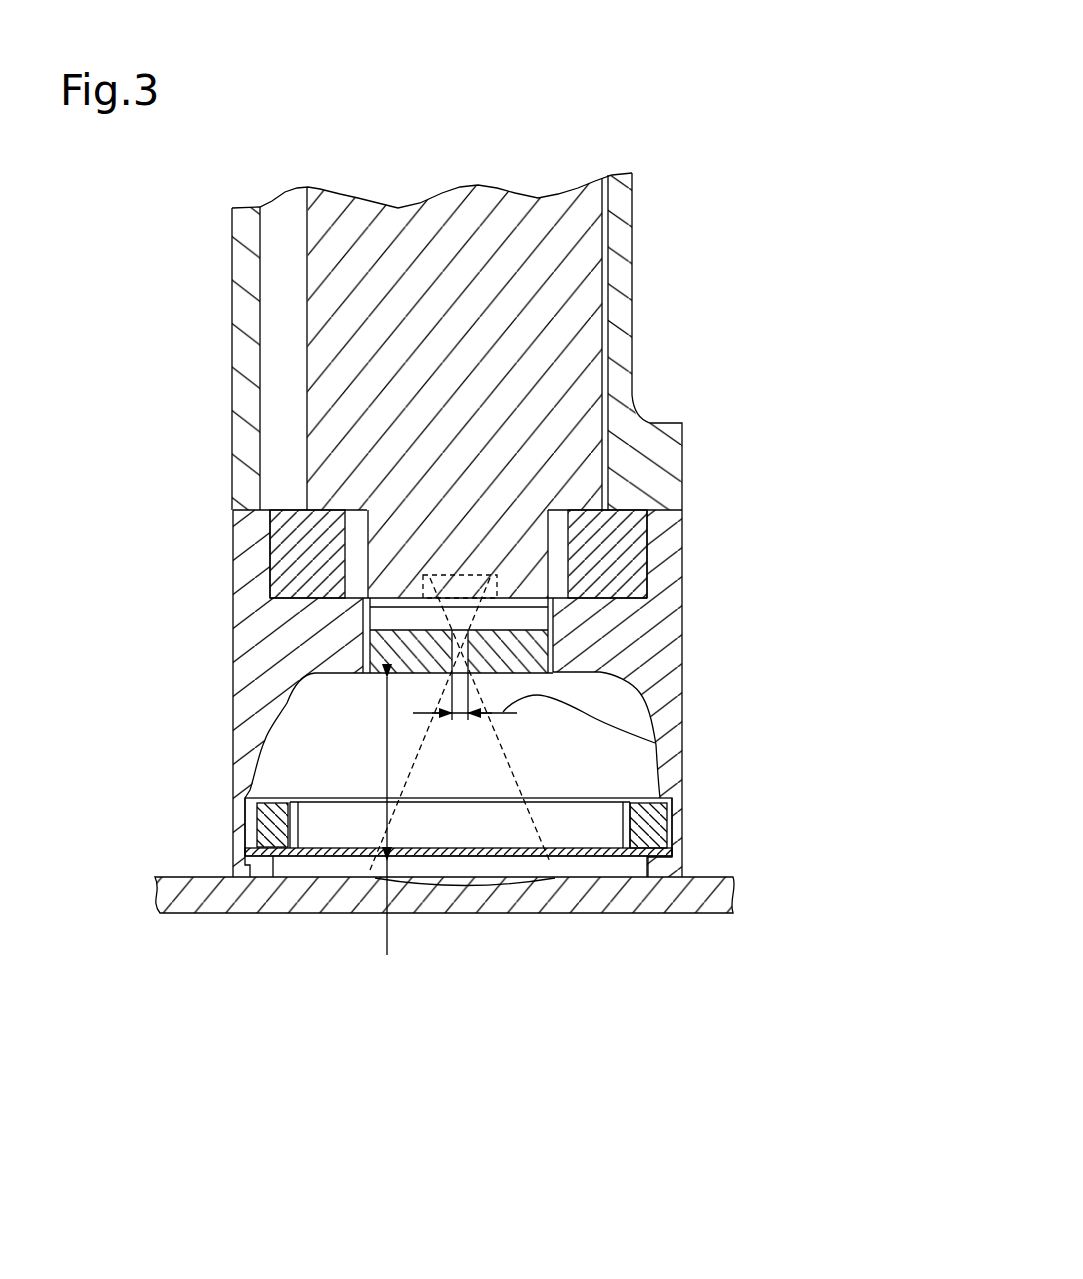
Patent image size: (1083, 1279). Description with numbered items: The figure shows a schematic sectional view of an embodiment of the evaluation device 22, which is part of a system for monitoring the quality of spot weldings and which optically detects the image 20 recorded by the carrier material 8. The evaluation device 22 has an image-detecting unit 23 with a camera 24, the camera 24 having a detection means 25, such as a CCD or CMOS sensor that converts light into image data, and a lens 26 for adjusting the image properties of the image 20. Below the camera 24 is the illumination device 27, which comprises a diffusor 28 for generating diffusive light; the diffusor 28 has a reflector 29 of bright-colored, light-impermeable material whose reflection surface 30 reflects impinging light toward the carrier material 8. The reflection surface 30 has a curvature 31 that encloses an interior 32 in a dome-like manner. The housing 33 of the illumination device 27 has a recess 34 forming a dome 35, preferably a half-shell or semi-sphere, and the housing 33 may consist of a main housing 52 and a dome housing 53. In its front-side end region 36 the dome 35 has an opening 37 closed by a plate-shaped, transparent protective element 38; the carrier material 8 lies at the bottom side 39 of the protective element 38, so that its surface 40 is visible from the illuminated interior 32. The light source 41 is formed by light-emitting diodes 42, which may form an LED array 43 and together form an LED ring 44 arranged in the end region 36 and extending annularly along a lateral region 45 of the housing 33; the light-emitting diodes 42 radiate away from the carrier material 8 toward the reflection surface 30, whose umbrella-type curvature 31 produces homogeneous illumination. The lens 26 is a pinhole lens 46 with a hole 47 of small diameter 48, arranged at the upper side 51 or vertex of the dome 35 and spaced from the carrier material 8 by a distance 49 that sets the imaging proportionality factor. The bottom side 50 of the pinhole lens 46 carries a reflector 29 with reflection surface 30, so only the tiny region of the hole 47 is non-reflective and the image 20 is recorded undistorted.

The carrier material 8 is at (278, 897).
The image 20 is at (464, 883).
The evaluation device 22 is at (742, 146).
The image-detecting unit 23 is at (742, 498).
The camera 24 is at (538, 200).
The detection means 25 is at (497, 576).
The lens 26 is at (468, 654).
The illumination device 27 is at (232, 625).
The diffusor 28 is at (290, 698).
The reflector 29 is at (352, 677).
The reflection surface 30 is at (318, 678).
The curvature 31 is at (282, 688).
The interior 32 is at (658, 777).
The housing 33 is at (670, 618).
The recess 34 is at (507, 798).
The dome 35 is at (268, 675).
The front-side end region 36 is at (215, 846).
The opening 37 is at (623, 875).
The protective element 38 is at (263, 870).
The bottom side 39 is at (517, 858).
The surface 40 is at (712, 873).
The light source 41 is at (245, 810).
The light-emitting diode 42 is at (647, 817).
The LED array 43 is at (240, 857).
The LED ring 44 is at (257, 858).
The lateral region 45 is at (682, 860).
The pinhole lens 46 is at (353, 622).
The hole 47 is at (583, 688).
The diameter 48 is at (655, 742).
The distance 49 is at (353, 678).
The bottom side 50 is at (413, 678).
The upper side 51 is at (595, 716).
The main housing 52 is at (247, 325).
The dome housing 53 is at (670, 588).